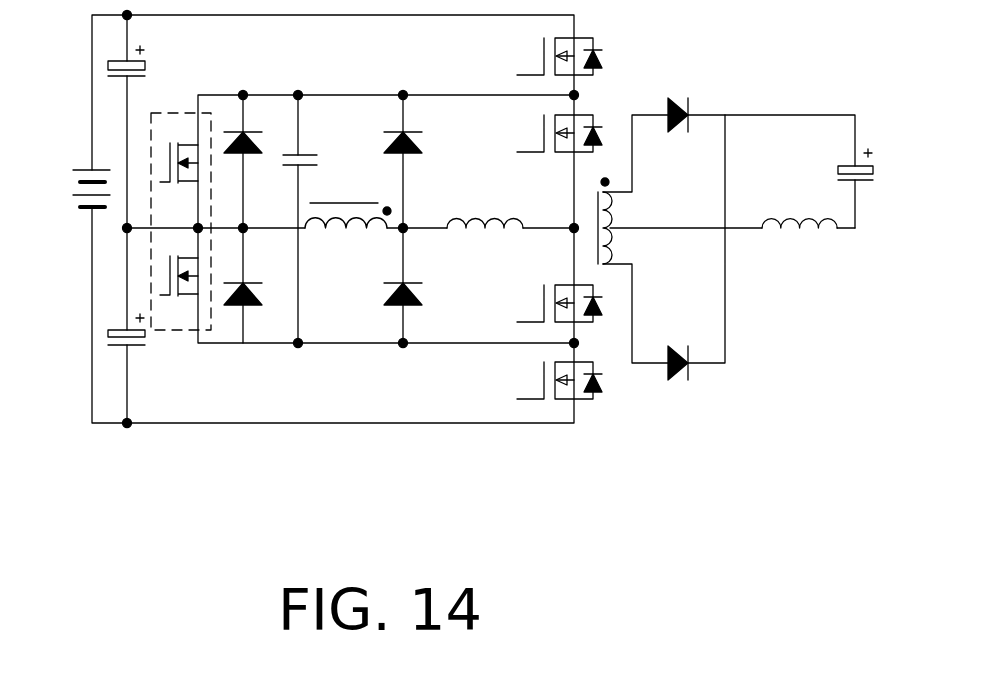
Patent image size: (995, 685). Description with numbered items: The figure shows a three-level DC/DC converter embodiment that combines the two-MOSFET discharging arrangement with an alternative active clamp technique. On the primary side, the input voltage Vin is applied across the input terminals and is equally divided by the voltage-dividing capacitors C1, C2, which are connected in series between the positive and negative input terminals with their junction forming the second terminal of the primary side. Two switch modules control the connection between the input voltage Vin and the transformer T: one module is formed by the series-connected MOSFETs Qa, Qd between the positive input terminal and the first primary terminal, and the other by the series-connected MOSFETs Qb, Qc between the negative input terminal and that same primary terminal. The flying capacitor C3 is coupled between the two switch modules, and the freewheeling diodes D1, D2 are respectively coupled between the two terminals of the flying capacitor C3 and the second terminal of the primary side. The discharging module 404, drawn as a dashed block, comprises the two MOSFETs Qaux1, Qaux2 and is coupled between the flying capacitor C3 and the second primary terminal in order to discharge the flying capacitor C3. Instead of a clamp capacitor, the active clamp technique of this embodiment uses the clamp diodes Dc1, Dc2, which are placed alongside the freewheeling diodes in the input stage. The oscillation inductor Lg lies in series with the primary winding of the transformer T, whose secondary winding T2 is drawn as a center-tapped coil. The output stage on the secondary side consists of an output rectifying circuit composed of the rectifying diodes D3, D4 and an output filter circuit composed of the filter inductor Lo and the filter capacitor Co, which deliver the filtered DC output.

The discharging module 404 is at (148, 272).
The input voltage Vin is at (77, 170).
The voltage-dividing capacitor C1 is at (140, 46).
The voltage-dividing capacitor C2 is at (120, 350).
The flying capacitor C3 is at (287, 181).
The MOSFET Qaux1 is at (197, 118).
The MOSFET Qaux2 is at (200, 328).
The freewheeling diode D1 is at (253, 127).
The freewheeling diode D2 is at (254, 273).
The clamp diode Dc1 is at (385, 125).
The clamp diode Dc2 is at (385, 276).
The transformer T is at (348, 198).
The transformer secondary winding T2 is at (628, 221).
The oscillation inductor Lg is at (485, 200).
The MOSFET Qd is at (554, 56).
The MOSFET Qa is at (554, 133).
The MOSFET Qb is at (554, 303).
The MOSFET Qc is at (554, 381).
The rectifying diode D3 is at (684, 140).
The rectifying diode D4 is at (684, 388).
The filter capacitor Co is at (846, 154).
The filter inductor Lo is at (799, 204).